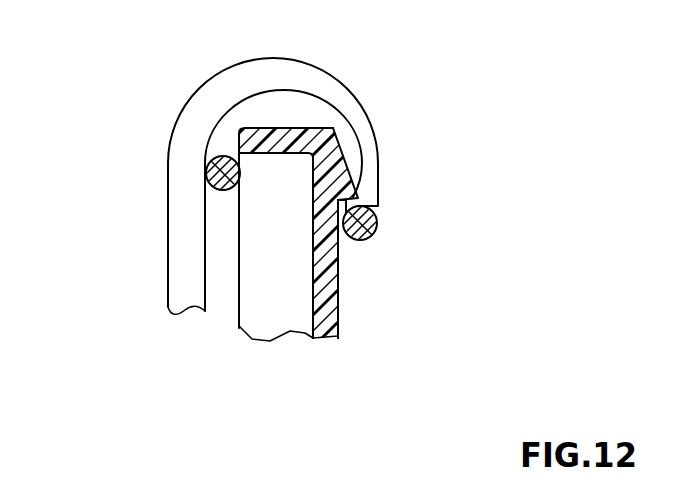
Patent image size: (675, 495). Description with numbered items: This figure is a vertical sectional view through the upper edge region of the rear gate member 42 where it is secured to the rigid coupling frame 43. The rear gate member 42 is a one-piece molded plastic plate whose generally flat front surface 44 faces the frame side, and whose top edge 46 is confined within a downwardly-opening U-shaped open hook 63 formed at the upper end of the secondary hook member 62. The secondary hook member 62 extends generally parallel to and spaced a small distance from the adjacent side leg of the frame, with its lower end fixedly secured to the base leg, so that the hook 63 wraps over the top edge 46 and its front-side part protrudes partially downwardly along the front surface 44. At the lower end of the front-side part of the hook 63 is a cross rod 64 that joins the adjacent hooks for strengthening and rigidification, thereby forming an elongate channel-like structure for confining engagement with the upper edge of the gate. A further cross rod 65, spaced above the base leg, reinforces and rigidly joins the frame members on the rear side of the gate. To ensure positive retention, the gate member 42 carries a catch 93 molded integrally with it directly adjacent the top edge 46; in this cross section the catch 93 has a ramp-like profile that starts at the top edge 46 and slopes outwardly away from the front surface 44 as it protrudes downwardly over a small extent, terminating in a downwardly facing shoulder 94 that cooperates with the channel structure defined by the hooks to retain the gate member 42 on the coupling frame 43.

The rear gate member 42 is at (302, 195).
The rigid coupling frame 43 is at (253, 179).
The front surface 44 is at (337, 332).
The top edge 46 is at (282, 138).
The secondary hook member 62 is at (187, 237).
The U-shaped open hook 63 is at (353, 121).
The cross rod 64 is at (372, 233).
The cross rod 65 is at (206, 172).
The catch 93 is at (340, 180).
The downwardly facing shoulder 94 is at (347, 207).